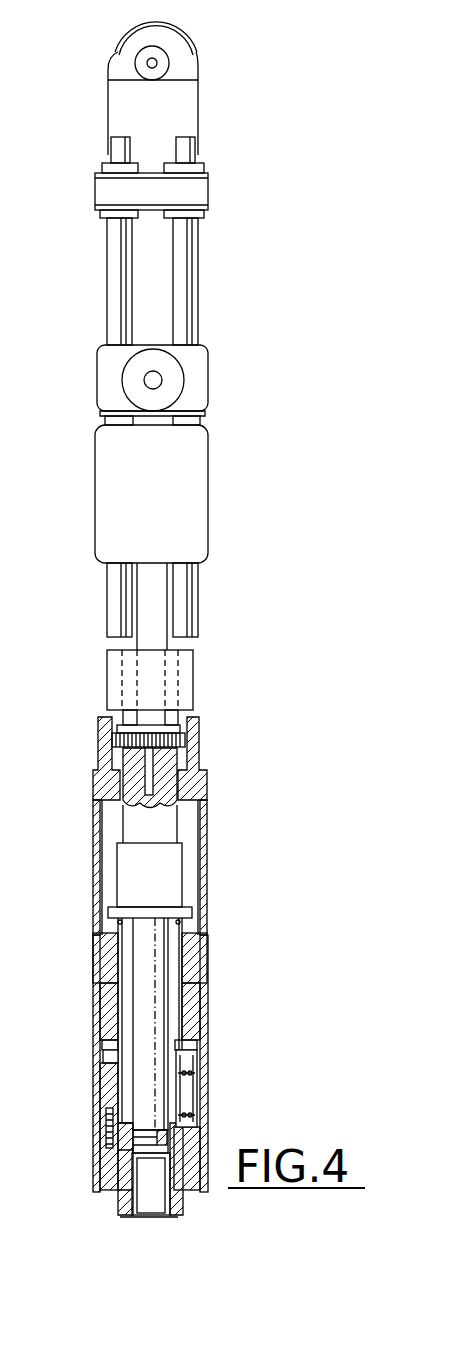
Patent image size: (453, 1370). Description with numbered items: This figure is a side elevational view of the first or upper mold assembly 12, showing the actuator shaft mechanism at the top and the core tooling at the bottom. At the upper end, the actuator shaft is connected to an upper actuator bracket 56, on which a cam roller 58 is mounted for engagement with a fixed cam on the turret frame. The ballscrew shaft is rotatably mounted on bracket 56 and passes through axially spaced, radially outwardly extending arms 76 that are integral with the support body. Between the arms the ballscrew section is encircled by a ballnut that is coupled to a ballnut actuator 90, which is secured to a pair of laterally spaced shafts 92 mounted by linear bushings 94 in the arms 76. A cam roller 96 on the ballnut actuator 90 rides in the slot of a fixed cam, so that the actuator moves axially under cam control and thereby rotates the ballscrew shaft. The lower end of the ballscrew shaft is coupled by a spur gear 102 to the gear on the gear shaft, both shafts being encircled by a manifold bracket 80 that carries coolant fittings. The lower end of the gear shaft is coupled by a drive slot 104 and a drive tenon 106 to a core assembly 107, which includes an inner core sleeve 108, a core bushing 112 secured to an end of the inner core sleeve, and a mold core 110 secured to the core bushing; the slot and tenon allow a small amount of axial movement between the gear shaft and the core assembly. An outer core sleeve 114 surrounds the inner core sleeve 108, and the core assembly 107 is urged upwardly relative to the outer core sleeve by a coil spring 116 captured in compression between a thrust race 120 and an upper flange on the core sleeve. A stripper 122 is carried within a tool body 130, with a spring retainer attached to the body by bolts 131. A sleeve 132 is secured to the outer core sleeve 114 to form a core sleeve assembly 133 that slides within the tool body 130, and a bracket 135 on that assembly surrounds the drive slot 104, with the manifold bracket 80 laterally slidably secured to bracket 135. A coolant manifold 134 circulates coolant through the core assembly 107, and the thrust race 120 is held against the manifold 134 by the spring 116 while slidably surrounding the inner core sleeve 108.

The cam roller 58 is at (172, 28).
The upper actuator bracket 56 is at (188, 95).
The linear bushings 94 is at (198, 167).
The laterally spaced shafts 92 is at (120, 258).
The cam roller 96 is at (173, 366).
The ballnut actuator 90 is at (202, 383).
The arms 76 is at (203, 462).
The first or upper mold assembly 12 is at (256, 548).
The manifold bracket 80 is at (190, 658).
The spur gear 102 is at (185, 740).
The drive tenon 106 is at (150, 767).
The drive slot 104 is at (165, 815).
The coolant manifold 134 is at (172, 858).
The thrust race 120 is at (185, 910).
The coil spring 116 is at (181, 929).
The sleeve 132 is at (198, 960).
The inner core sleeve 108 is at (157, 983).
The tool body 130 is at (202, 1050).
The stripper 122 is at (180, 1150).
The mold core 110 is at (172, 1213).
The bracket 135 is at (100, 748).
The core sleeve assembly 133 is at (93, 893).
The core assembly 107 is at (137, 971).
The bolts 131 is at (107, 1073).
The outer core sleeve 114 is at (125, 1080).
The core bushing 112 is at (117, 1178).